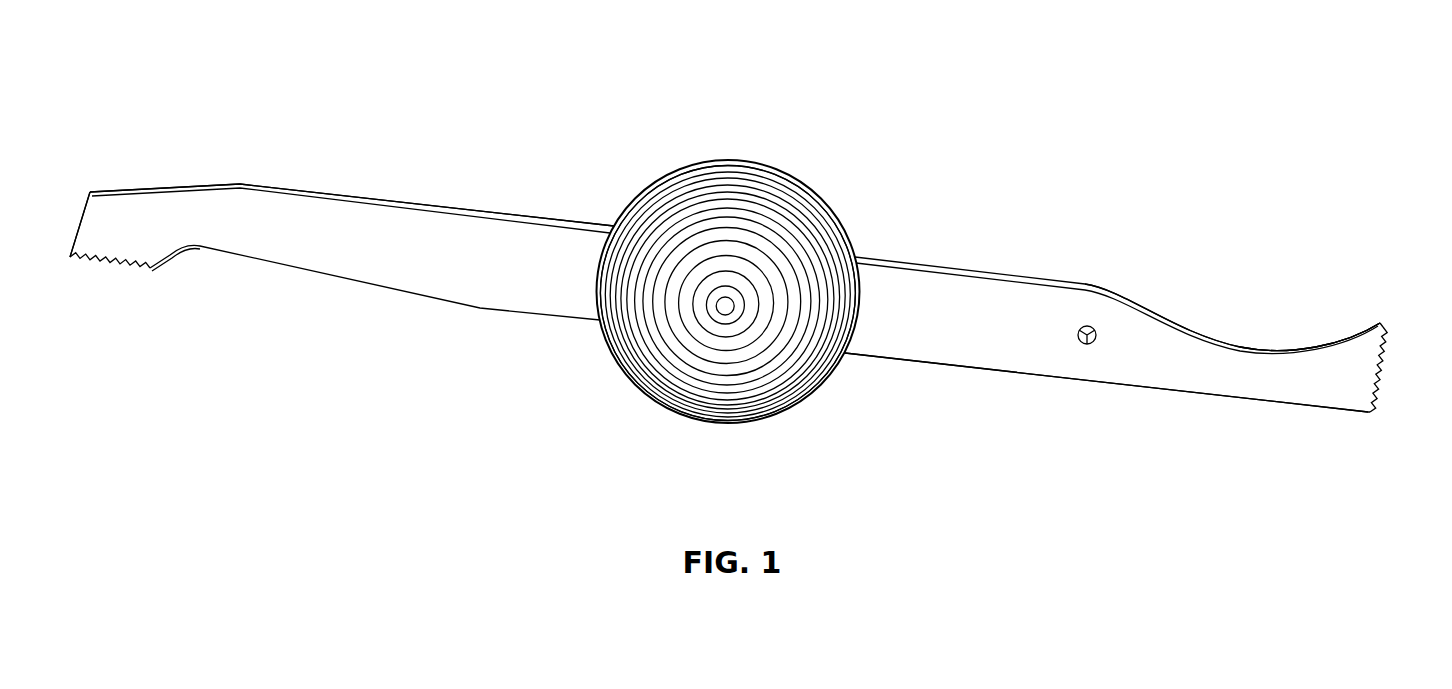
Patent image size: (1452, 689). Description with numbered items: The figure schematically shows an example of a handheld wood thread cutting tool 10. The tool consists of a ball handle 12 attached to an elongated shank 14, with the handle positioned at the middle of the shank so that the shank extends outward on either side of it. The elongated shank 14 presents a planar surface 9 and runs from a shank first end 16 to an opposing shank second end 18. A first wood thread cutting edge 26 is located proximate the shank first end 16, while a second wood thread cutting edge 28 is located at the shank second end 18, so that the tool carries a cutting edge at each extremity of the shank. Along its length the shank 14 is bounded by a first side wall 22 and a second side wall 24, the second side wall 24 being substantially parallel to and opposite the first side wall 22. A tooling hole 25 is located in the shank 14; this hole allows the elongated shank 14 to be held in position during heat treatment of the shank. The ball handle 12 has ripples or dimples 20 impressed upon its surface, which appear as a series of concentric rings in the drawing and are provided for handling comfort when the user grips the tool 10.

The handheld wood thread cutting tool 10 is at (356, 50).
The planar surface 9 is at (378, 264).
The ball handle 12 is at (767, 180).
The elongated shank 14 is at (472, 210).
The shank first end 16 is at (130, 190).
The shank second end 18 is at (1352, 333).
The ripples or dimples 20 is at (642, 358).
The first side wall 22 is at (1303, 345).
The second side wall 24 is at (1173, 392).
The tooling hole 25 is at (1095, 343).
The first wood thread cutting edge 26 is at (116, 272).
The second wood thread cutting edge 28 is at (1383, 365).